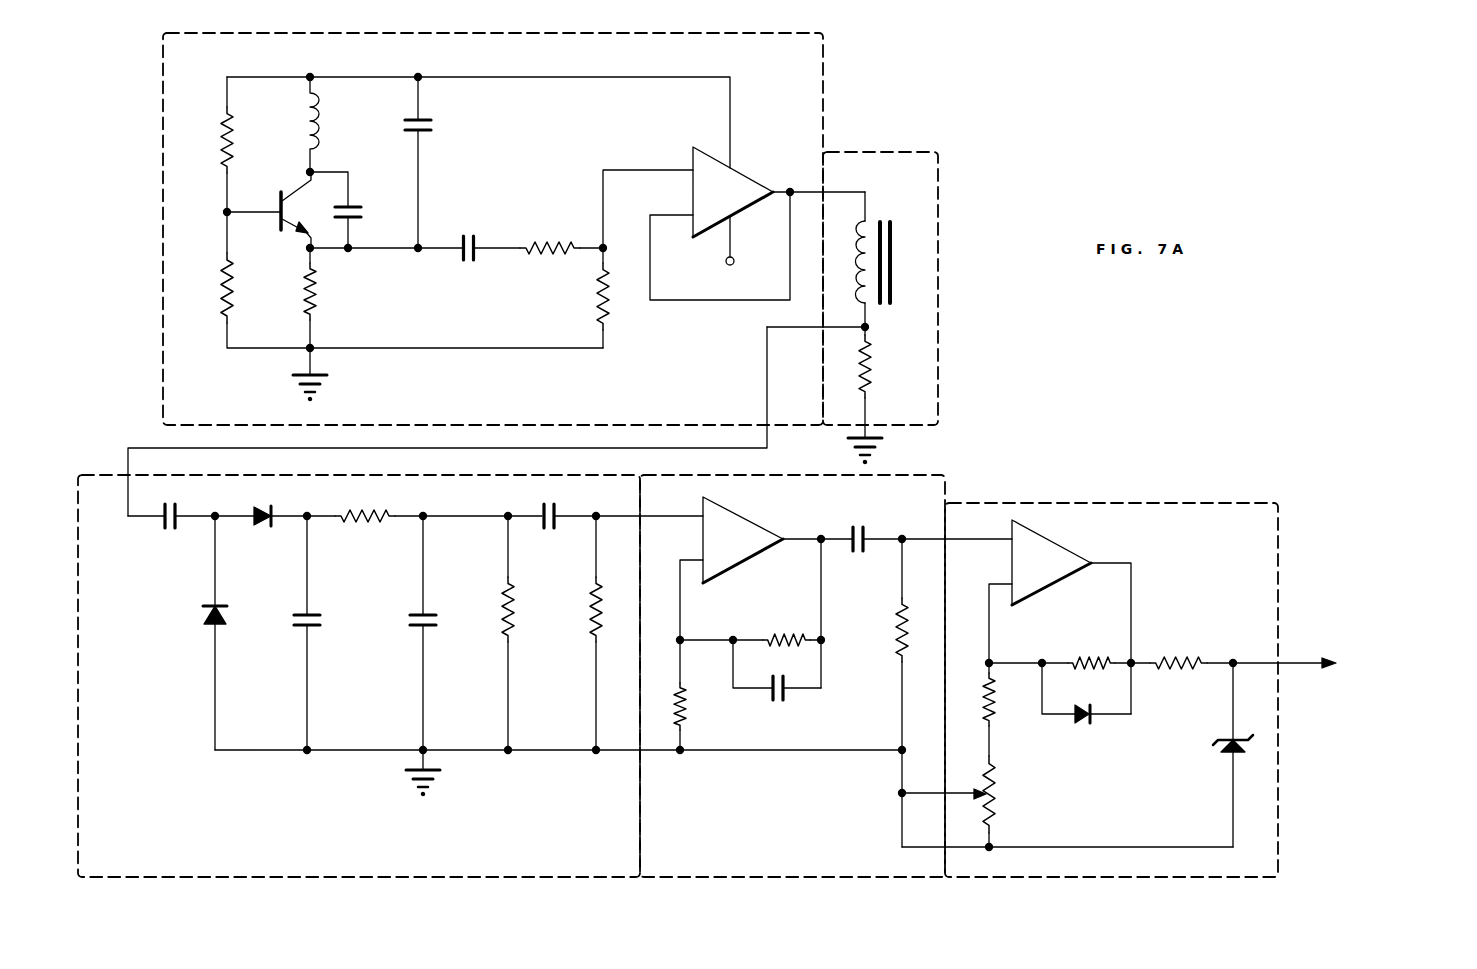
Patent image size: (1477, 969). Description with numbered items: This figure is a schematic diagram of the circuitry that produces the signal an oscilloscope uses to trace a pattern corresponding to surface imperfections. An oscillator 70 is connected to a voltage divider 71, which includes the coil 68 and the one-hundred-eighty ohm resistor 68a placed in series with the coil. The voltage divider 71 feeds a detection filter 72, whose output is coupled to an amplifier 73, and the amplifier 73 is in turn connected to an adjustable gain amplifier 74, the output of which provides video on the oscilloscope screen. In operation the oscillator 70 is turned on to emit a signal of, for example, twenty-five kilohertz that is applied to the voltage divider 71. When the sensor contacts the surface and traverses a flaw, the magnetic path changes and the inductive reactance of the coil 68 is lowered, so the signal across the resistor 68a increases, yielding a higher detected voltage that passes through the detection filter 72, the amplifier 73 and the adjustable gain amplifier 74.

The oscillator 70 is at (826, 78).
The voltage divider 71 is at (893, 151).
The detection filter 72 is at (97, 474).
The amplifier 73 is at (940, 477).
The adjustable gain amplifier 74 is at (1222, 503).
The coil 68 is at (862, 238).
The 180Ω resistor 68a is at (870, 395).